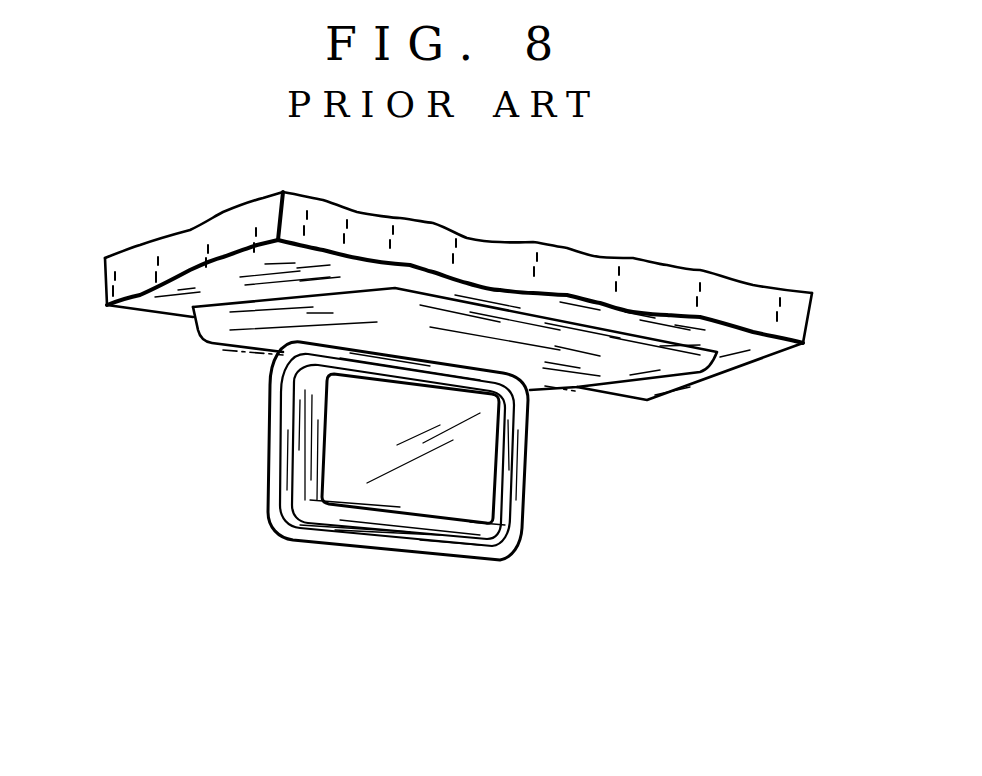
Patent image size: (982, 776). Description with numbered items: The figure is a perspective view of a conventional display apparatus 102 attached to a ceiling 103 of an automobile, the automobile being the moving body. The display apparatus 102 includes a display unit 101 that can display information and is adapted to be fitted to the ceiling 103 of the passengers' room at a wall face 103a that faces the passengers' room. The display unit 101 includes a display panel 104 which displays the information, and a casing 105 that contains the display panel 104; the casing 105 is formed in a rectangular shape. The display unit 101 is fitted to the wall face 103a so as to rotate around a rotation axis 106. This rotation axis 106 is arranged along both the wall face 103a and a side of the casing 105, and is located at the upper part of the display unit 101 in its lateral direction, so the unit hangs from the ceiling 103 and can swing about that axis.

The display unit 101 is at (527, 483).
The display apparatus 102 is at (638, 433).
The ceiling 103 is at (760, 342).
The wall face 103a is at (223, 277).
The display panel 104 is at (470, 503).
The casing 105 is at (383, 542).
The rotation axis 106 is at (268, 357).